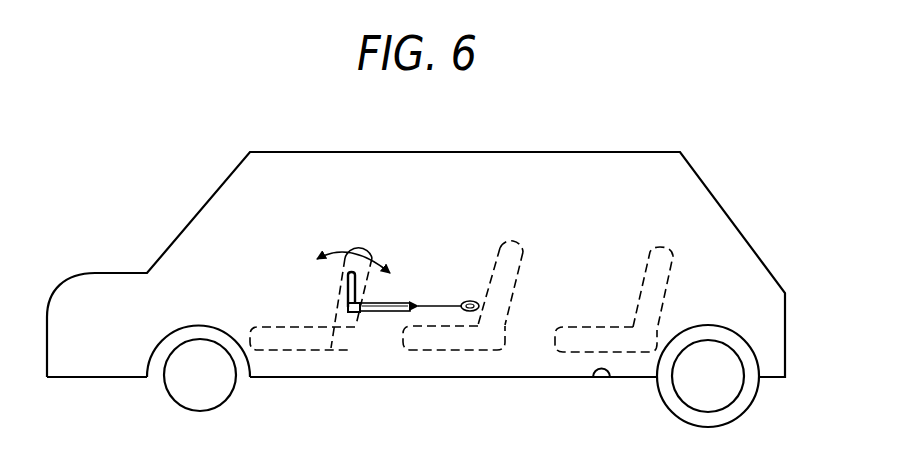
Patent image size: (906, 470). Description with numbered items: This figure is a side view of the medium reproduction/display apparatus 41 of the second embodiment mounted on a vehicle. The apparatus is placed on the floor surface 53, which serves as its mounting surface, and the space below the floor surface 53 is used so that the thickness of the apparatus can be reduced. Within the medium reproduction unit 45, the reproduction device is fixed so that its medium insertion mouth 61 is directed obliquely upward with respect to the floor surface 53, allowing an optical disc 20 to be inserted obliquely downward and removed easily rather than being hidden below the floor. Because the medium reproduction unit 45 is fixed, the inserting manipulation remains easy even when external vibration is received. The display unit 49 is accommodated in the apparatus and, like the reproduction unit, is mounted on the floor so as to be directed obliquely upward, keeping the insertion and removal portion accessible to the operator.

The optical disc 20 is at (470, 312).
The medium reproduction/display apparatus 41 is at (360, 310).
The medium reproduction unit 45 is at (393, 311).
The display unit 49 is at (347, 307).
The floor surface 53 is at (607, 377).
The medium insertion mouth 61 is at (410, 303).